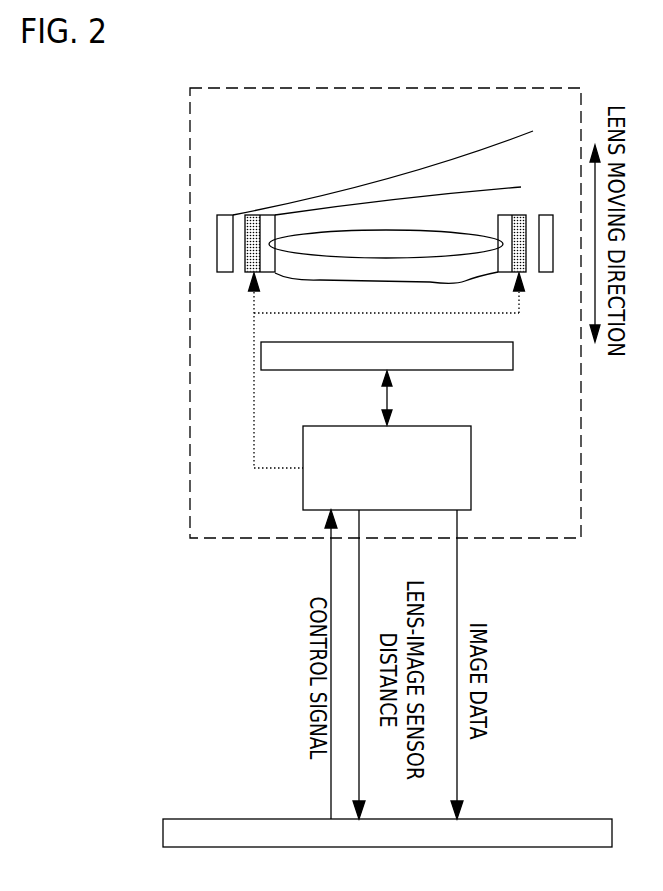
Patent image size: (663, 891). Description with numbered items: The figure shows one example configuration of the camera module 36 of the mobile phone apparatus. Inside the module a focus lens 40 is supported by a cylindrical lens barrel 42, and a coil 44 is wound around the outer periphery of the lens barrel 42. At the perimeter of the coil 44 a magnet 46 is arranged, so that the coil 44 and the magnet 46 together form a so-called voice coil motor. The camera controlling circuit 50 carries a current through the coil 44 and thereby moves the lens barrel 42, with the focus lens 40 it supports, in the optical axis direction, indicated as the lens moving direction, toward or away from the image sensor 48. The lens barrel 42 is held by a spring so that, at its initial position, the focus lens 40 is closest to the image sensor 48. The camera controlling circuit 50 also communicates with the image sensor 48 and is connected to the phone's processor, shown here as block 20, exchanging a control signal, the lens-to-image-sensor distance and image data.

The camera module 36 is at (208, 42).
The focus lens 40 is at (450, 232).
The lens barrel 42 is at (504, 215).
The coil 44 is at (460, 282).
The magnet 46 is at (548, 215).
The image sensor 48 is at (503, 370).
The camera controlling circuit 50 is at (471, 445).
The processor 20 is at (387, 833).